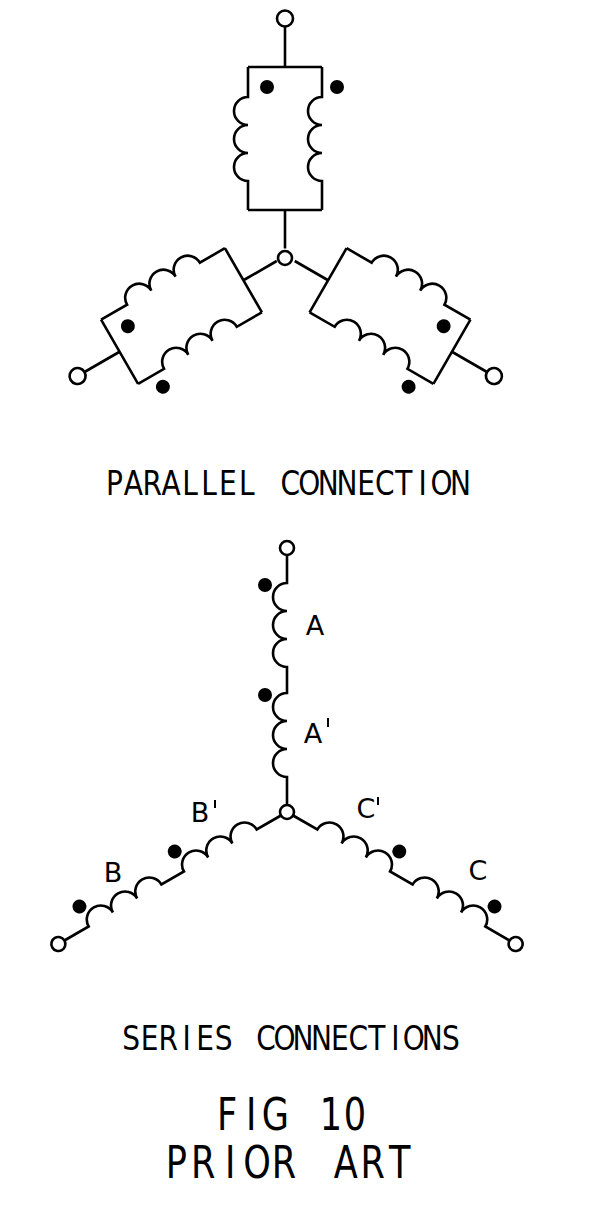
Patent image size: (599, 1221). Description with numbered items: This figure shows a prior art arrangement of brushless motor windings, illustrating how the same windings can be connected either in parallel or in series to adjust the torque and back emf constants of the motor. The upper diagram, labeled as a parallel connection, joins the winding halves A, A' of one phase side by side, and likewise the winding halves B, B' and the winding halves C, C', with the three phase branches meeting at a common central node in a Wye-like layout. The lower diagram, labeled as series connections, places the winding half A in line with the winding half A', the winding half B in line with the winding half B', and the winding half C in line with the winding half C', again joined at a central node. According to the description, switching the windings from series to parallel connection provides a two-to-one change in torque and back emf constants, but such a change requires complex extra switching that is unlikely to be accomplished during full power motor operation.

The phase A winding half A is at (278, 130).
The phase A winding half (prime) A' is at (333, 138).
The phase B winding half B is at (170, 314).
The phase B winding half (prime) B' is at (202, 351).
The phase C winding half C is at (370, 351).
The phase C winding half (prime) C' is at (401, 314).